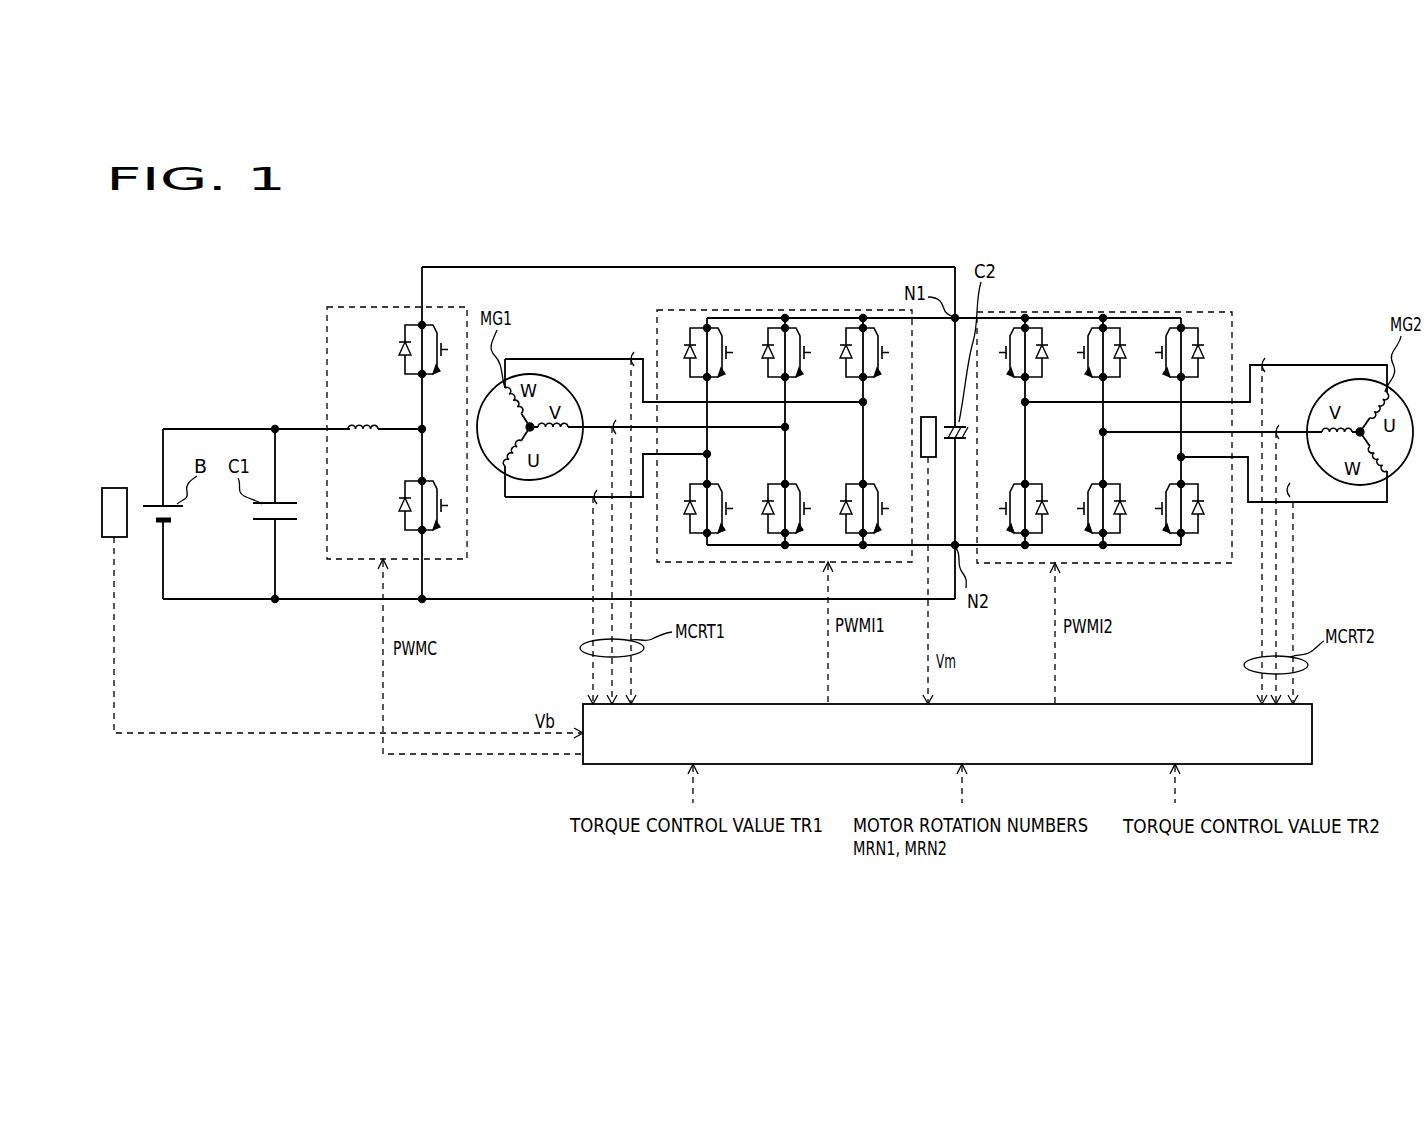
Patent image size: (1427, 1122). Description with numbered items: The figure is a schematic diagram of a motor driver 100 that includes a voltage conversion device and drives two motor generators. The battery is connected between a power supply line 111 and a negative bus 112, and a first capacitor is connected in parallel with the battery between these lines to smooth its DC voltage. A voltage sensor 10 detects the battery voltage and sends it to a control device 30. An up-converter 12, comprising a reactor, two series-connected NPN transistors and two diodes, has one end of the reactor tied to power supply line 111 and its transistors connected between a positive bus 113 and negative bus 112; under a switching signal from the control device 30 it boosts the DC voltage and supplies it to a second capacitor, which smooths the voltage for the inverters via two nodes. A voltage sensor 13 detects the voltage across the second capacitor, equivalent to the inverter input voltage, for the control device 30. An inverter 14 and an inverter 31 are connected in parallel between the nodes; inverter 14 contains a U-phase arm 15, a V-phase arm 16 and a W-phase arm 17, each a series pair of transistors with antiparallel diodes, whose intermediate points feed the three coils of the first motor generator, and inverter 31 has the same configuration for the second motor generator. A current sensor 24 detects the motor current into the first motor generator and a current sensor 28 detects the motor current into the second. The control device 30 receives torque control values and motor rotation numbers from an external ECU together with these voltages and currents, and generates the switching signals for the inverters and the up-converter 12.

The voltage sensor 10 is at (114, 488).
The up-converter 12 is at (327, 340).
The voltage sensor 13 is at (929, 417).
The inverter 14 is at (748, 310).
The U-phase arm 15 is at (739, 459).
The V-phase arm 16 is at (817, 440).
The W-phase arm 17 is at (898, 416).
The current sensor 24 is at (633, 364).
The current sensor 28 is at (1265, 375).
The control device 30 is at (1312, 727).
The inverter 31 is at (1124, 312).
The motor driver 100 is at (856, 233).
The power supply line 111 is at (296, 428).
The negative bus 112 is at (328, 601).
The positive bus 113 is at (540, 266).